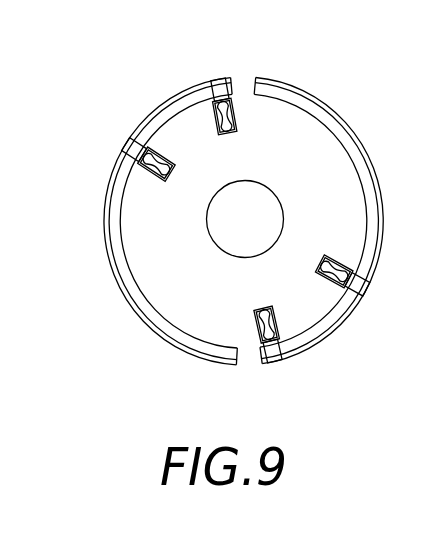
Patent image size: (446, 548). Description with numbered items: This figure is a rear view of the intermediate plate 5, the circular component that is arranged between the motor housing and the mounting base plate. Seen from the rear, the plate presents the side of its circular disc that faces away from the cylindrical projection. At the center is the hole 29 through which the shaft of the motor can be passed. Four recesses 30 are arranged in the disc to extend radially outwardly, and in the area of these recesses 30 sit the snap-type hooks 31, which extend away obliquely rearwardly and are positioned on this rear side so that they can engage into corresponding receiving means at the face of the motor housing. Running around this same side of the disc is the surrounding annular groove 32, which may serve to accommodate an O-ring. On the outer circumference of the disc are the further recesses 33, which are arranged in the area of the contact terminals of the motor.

The intermediate plate 5 is at (142, 337).
The hole 29 is at (260, 222).
The recesses 30 is at (197, 104).
The snap-type hooks 31 is at (217, 96).
The annular groove 32 is at (348, 135).
The further recesses 33 is at (247, 83).